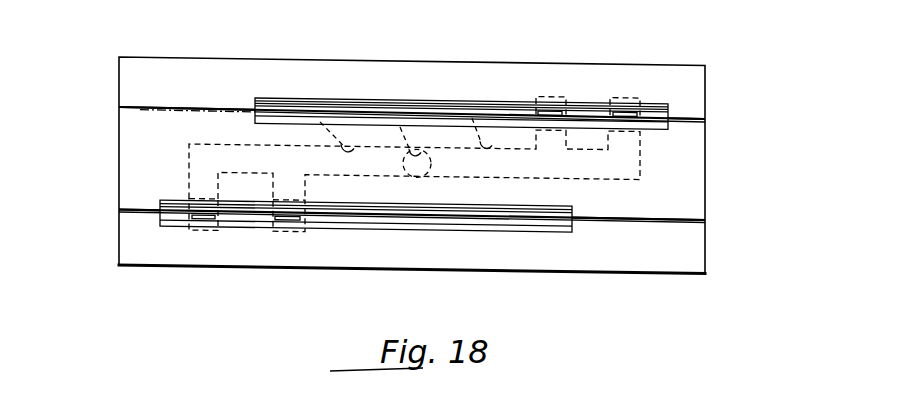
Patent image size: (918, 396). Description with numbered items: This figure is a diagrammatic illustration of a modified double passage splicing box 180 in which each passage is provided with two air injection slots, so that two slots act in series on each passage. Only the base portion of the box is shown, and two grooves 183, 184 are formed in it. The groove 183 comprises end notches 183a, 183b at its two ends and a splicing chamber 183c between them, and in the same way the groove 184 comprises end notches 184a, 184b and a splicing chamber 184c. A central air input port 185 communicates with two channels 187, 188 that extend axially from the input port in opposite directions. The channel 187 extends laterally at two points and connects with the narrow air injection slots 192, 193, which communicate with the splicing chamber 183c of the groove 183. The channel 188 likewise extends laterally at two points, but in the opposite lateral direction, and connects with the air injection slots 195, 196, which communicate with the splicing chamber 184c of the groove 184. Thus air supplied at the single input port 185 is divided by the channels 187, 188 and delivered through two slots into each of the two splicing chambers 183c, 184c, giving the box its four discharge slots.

The double passage splicing box 180 is at (724, 129).
The groove 183 is at (111, 110).
The end notch 183a is at (198, 107).
The end notch 183b is at (690, 104).
The splicing chamber 183c is at (428, 98).
The groove 184 is at (111, 215).
The end notch 184a is at (140, 214).
The end notch 184b is at (668, 214).
The splicing chamber 184c is at (545, 226).
The air input port 185 is at (392, 96).
The channel 187 is at (468, 95).
The channel 188 is at (312, 97).
The air injection slot 192 is at (550, 105).
The air injection slot 193 is at (626, 105).
The air injection slot 195 is at (288, 229).
The air injection slot 196 is at (200, 229).